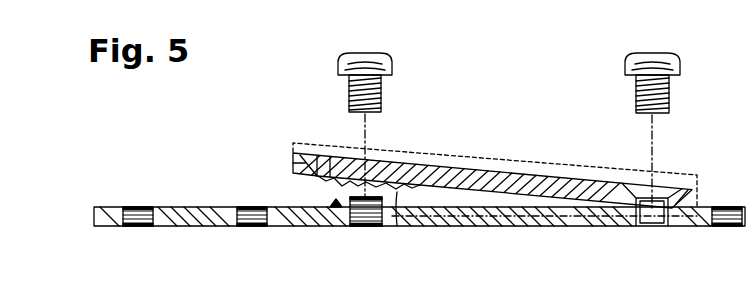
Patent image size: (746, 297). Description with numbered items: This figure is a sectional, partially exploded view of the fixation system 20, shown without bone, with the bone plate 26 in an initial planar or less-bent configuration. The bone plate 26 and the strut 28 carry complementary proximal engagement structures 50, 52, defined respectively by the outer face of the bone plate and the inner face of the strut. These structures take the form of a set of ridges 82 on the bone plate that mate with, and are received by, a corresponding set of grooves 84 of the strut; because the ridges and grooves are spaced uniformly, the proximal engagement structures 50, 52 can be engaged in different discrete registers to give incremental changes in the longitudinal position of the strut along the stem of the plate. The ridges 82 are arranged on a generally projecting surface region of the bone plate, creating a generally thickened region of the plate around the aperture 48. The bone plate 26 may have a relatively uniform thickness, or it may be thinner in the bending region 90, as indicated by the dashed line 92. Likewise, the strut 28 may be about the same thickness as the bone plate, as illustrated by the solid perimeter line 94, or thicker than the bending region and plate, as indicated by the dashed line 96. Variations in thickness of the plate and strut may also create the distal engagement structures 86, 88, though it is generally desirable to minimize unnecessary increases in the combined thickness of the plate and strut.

The fixation system 20 is at (257, 135).
The bone plate 26 is at (187, 199).
The strut 28 is at (457, 152).
The aperture 48 is at (366, 224).
The proximal engagement structure 50 is at (320, 196).
The proximal engagement structure 52 is at (335, 202).
The ridges 82 is at (400, 210).
The grooves 84 is at (397, 192).
The distal engagement structure 86 is at (680, 207).
The distal engagement structure 88 is at (640, 209).
The bending region 90 is at (531, 232).
The dashed line 92 is at (470, 214).
The solid perimeter line 94 is at (475, 166).
The dashed line 96 is at (548, 168).